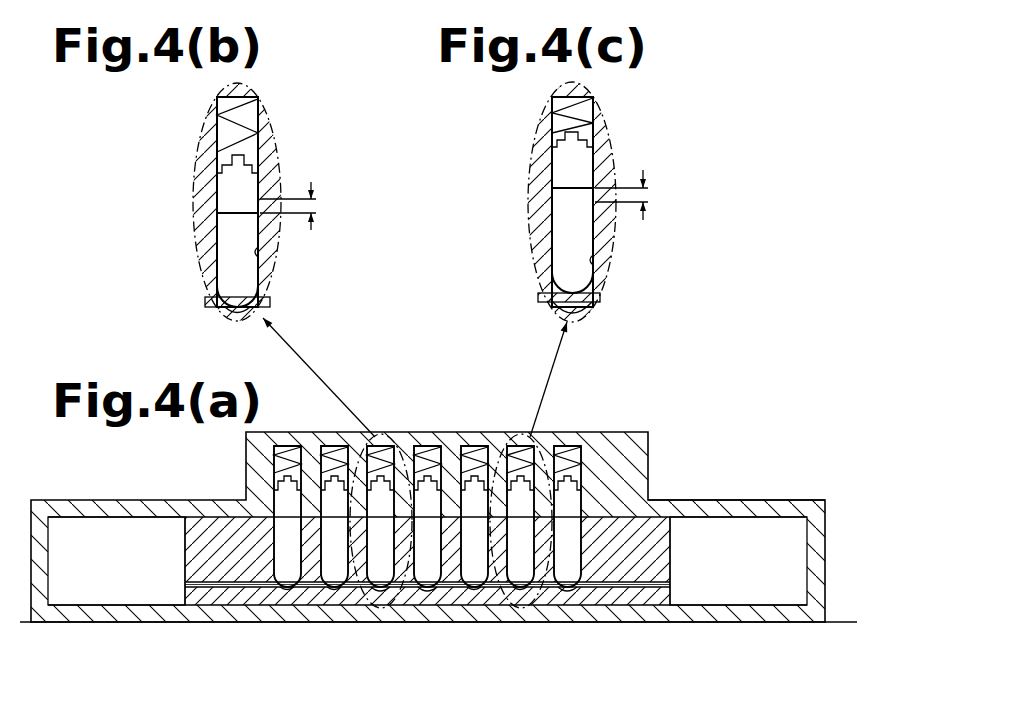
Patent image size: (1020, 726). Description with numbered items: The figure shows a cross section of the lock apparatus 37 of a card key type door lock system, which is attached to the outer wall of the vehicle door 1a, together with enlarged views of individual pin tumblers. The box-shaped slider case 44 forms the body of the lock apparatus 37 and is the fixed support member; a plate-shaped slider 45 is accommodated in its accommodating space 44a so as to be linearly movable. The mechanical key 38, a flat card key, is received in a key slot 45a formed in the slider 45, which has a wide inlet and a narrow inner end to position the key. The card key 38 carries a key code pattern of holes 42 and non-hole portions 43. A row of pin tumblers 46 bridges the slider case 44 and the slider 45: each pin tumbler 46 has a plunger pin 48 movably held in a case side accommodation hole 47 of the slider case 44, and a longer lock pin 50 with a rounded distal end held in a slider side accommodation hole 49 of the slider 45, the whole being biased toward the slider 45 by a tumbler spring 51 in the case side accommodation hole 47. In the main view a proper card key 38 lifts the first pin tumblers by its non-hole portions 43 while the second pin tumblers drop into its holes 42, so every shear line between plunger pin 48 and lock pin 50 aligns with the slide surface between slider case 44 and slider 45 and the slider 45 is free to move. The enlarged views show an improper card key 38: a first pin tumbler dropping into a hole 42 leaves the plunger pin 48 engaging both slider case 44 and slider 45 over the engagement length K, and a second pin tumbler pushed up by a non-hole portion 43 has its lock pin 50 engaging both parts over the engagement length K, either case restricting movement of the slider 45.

In FIG. 4A, the vehicle door 1a is at (843, 622).
In FIG. 4A, the lock apparatus 37 is at (77, 500).
In FIG. 4A, the mechanical key 38 is at (272, 607).
In FIG. 4B, the mechanical key 38 is at (260, 307).
In FIG. 4C, the mechanical key 38 is at (600, 288).
In FIG. 4A, the holes 42 is at (287, 588).
In FIG. 4B, the holes 42 is at (228, 320).
In FIG. 4A, the non-hole portions 43 is at (353, 597).
In FIG. 4C, the non-hole portions 43 is at (587, 320).
In FIG. 4A, the slider case 44 is at (705, 500).
In FIG. 4A, the accommodating space 44a is at (751, 520).
In FIG. 4A, the slider 45 is at (217, 535).
In FIG. 4A, the key slot 45a is at (620, 580).
In FIG. 4A, the pin tumbler 46 is at (598, 645).
In FIG. 4B, the pin tumbler 46 is at (215, 232).
In FIG. 4C, the pin tumbler 46 is at (595, 233).
In FIG. 4B, the case side accommodation hole 47 is at (253, 182).
In FIG. 4C, the case side accommodation hole 47 is at (587, 158).
In FIG. 4B, the plunger pin 48 is at (222, 180).
In FIG. 4C, the plunger pin 48 is at (563, 172).
In FIG. 4B, the slider side accommodation hole 49 is at (255, 247).
In FIG. 4C, the slider side accommodation hole 49 is at (593, 260).
In FIG. 4B, the lock pin 50 is at (227, 267).
In FIG. 4C, the lock pin 50 is at (563, 247).
In FIG. 4B, the tumbler spring 51 is at (222, 132).
In FIG. 4C, the tumbler spring 51 is at (562, 112).
In FIG. 4B, the engagement length K is at (313, 207).
In FIG. 4C, the engagement length K is at (645, 197).